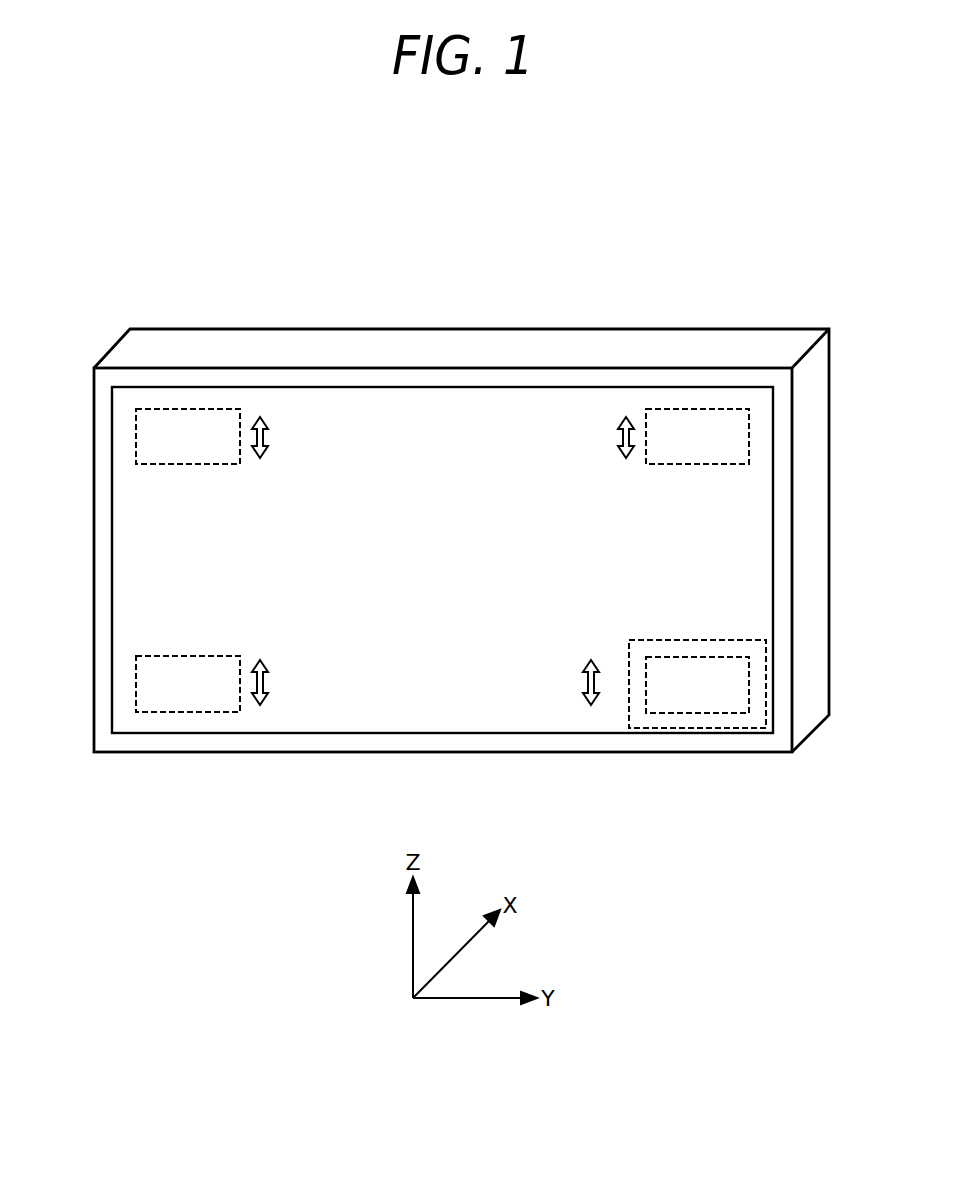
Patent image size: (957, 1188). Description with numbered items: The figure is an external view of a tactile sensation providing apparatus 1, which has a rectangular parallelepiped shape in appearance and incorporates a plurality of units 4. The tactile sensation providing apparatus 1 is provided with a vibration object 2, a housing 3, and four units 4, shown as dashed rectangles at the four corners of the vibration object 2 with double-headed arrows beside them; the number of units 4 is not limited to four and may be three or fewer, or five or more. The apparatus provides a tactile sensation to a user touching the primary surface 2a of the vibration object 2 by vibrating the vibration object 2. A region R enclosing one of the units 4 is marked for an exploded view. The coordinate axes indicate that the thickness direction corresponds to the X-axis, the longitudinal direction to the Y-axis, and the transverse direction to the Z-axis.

The tactile sensation providing apparatus 1 is at (240, 277).
The vibration object 2 is at (360, 387).
The primary surface 2a is at (422, 688).
The housing 3 is at (460, 329).
The unit 4 is at (187, 466).
The region R is at (666, 640).